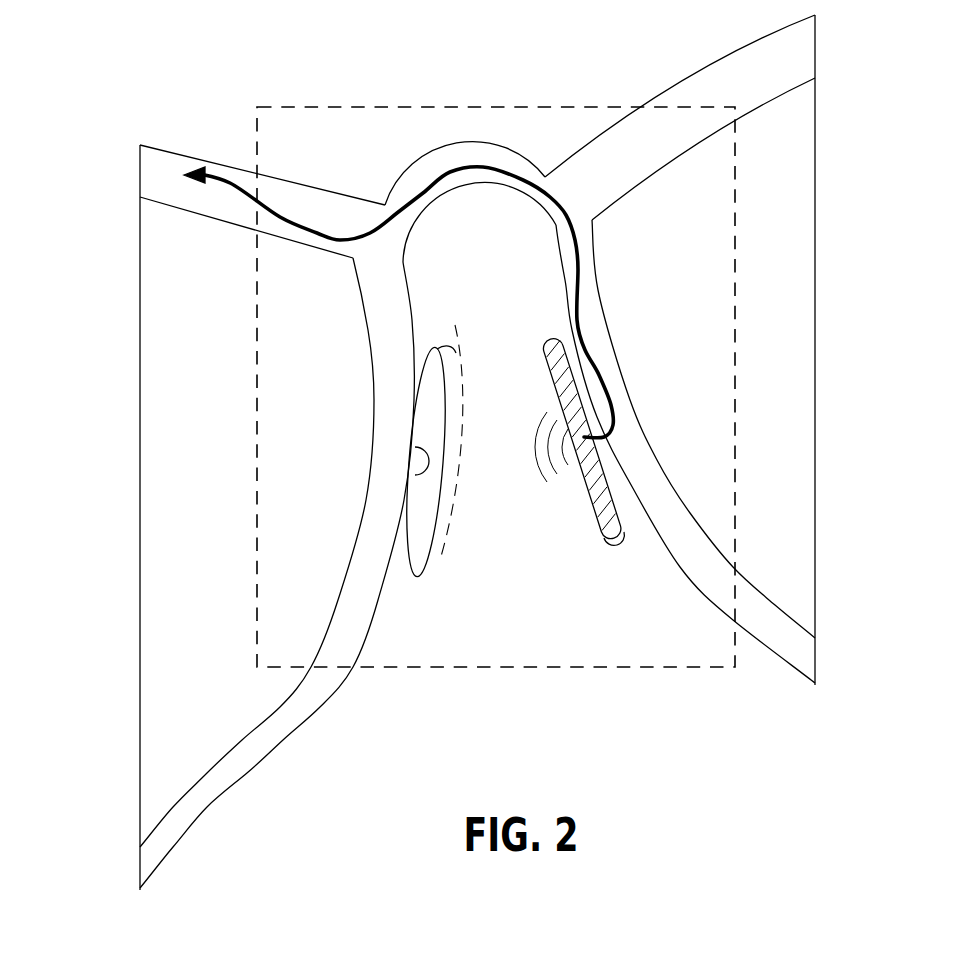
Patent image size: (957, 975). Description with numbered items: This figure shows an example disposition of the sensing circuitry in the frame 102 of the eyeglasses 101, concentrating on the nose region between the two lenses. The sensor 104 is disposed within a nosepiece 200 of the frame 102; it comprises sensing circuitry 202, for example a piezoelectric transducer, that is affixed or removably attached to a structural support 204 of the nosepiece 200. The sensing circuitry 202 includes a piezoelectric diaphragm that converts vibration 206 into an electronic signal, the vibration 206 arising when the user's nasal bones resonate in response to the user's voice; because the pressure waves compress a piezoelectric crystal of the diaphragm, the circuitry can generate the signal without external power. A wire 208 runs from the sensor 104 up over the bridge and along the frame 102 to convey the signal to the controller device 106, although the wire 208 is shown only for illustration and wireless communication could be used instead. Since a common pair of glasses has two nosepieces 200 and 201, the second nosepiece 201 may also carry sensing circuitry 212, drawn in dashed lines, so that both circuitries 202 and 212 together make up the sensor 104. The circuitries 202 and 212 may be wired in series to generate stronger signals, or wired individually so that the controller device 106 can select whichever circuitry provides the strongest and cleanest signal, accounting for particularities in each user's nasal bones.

The eyeglasses 101 is at (829, 354).
The frame 102 is at (337, 697).
The sensor 104 is at (737, 270).
The controller device 106 is at (112, 175).
The nosepiece 200 is at (581, 438).
The nosepiece 201 is at (431, 565).
The sensing circuitry 202 is at (598, 516).
The structural support 204 is at (620, 541).
The vibration 206 is at (520, 470).
The wire 208 is at (582, 236).
The sensing circuitry 212 is at (455, 322).